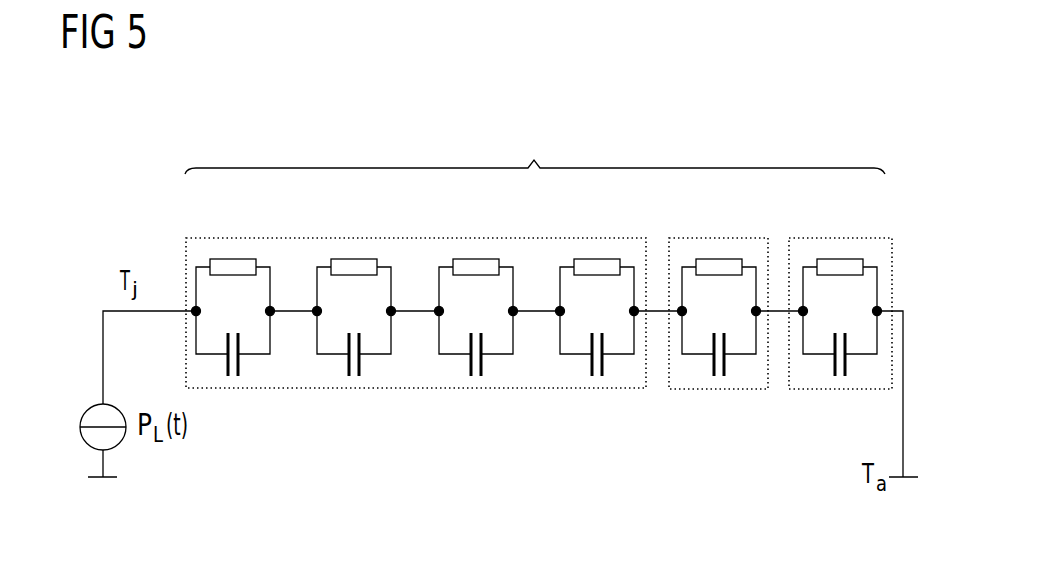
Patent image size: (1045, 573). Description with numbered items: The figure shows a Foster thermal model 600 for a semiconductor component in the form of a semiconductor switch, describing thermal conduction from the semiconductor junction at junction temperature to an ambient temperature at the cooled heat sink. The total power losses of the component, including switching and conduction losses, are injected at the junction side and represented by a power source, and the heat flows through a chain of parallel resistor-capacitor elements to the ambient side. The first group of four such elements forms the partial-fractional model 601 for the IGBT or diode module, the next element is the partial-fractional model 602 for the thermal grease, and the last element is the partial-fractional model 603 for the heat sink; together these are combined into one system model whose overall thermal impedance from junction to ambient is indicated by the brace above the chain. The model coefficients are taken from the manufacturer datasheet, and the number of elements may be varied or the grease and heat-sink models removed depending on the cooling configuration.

The thermal impedance network model 600 is at (203, 145).
The partial-fractional model for the IGBT or diode module 601 is at (418, 237).
The partial-fractional model for the thermal grease 602 is at (716, 237).
The partial-fractional model for the heat sink 603 is at (837, 237).